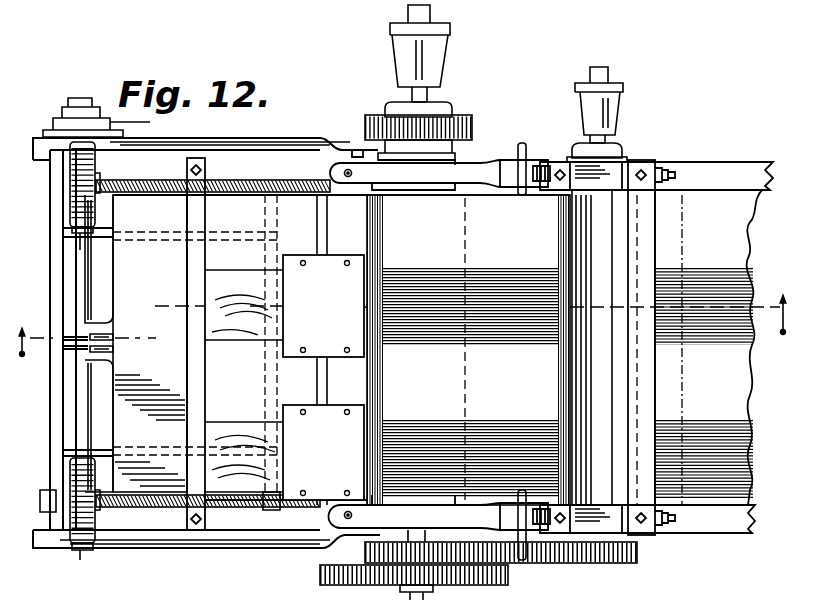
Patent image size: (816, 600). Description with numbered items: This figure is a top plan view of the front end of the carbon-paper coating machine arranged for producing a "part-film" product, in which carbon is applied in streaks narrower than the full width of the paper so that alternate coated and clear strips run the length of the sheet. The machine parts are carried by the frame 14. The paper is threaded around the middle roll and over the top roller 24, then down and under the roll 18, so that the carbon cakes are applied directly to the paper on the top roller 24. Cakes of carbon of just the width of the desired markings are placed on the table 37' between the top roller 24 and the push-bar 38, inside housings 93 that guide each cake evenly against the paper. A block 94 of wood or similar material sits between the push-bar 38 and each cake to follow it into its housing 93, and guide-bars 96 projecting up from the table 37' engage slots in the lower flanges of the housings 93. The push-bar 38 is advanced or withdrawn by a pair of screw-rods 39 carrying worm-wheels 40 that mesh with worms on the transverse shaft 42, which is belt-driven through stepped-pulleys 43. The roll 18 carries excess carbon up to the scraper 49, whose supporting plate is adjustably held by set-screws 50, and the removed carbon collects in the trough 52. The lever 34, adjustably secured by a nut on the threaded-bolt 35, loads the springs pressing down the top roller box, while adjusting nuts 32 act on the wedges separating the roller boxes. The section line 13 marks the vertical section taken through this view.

The stepped-pulleys 43 is at (83, 98).
The worm-wheels 40 is at (72, 208).
The screw-rods 39 is at (146, 180).
The transverse shaft 42 is at (85, 264).
The table 37' is at (195, 345).
The push-bar 38 is at (195, 252).
The block 94 is at (244, 381).
The section line 13— 13 is at (410, 341).
The housings 93 is at (323, 377).
The guide-bars 96 is at (318, 379).
The roll 18 is at (562, 377).
The top roller 24 is at (465, 200).
The scraper 49 is at (618, 450).
The set-screws 50 is at (638, 378).
The trough 52 is at (675, 380).
The frame 14 is at (656, 349).
The lever 34 is at (440, 340).
The threaded-bolt 35 is at (348, 170).
The adjusting nuts 32 is at (520, 143).